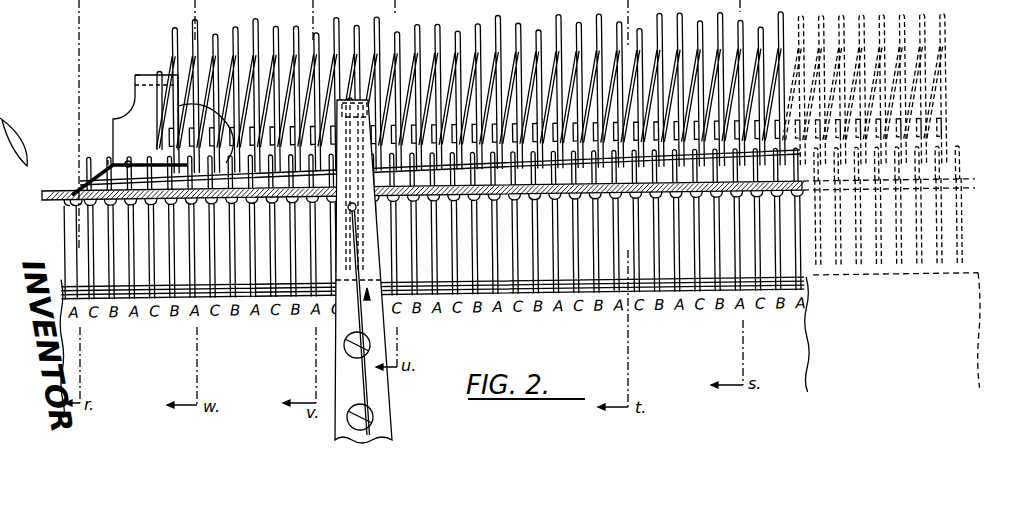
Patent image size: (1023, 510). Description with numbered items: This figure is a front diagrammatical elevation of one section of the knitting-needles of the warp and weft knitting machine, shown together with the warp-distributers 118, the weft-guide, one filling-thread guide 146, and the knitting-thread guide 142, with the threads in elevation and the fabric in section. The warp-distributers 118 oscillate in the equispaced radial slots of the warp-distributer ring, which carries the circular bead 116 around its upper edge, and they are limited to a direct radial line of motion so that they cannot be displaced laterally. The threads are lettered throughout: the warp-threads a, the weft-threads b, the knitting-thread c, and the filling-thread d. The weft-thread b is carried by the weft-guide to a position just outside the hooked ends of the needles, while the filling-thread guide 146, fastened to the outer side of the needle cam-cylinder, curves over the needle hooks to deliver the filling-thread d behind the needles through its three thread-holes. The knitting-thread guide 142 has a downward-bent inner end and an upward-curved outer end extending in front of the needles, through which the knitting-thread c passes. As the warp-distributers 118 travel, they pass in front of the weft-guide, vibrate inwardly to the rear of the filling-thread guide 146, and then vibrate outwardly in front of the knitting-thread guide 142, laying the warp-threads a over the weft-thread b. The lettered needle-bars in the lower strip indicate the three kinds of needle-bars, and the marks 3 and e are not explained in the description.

The knitting-thread guide 142 is at (139, 75).
The filling-thread guide 146 is at (386, 394).
The warp-distributers 118 is at (518, 30).
The circular bead 116 is at (580, 26).
The dashed extension 3 is at (895, 283).
The warp-threads a is at (471, 52).
The weft-threads b is at (600, 158).
The knitting-thread c is at (157, 109).
The filling-threads d is at (110, 157).
The pin e is at (128, 164).